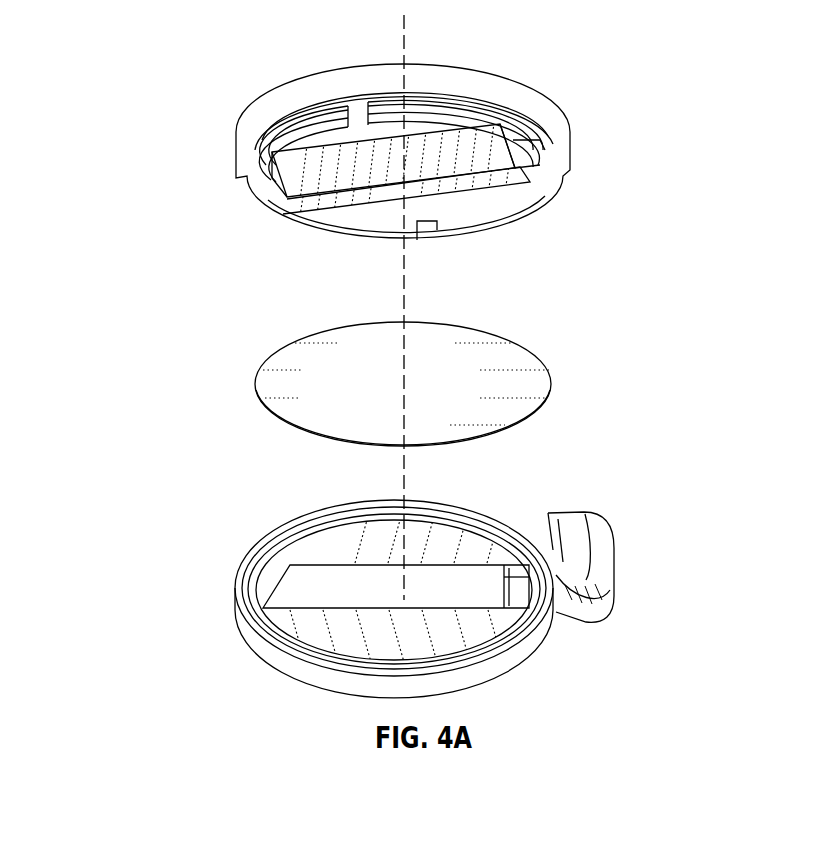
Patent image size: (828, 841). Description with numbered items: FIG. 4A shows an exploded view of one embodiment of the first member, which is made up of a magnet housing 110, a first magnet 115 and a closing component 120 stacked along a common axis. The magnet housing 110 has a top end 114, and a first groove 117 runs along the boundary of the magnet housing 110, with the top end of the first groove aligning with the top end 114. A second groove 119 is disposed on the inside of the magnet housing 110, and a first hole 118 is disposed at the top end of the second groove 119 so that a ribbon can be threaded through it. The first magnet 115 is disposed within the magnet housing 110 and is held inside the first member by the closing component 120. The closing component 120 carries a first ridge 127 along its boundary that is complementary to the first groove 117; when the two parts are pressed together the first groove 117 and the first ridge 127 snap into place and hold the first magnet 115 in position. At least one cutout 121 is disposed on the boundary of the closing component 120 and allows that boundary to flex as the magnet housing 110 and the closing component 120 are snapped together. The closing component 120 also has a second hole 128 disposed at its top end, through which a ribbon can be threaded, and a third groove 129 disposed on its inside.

The magnet housing 110 is at (377, 577).
The top end 114 is at (558, 580).
The first magnet 115 is at (303, 372).
The first groove 117 is at (437, 513).
The first hole 118 is at (518, 588).
The second groove 119 is at (292, 593).
The closing component 120 is at (360, 164).
The cutout 121 is at (427, 227).
The first ridge 127 is at (510, 123).
The second hole 128 is at (508, 153).
The third groove 129 is at (293, 177).